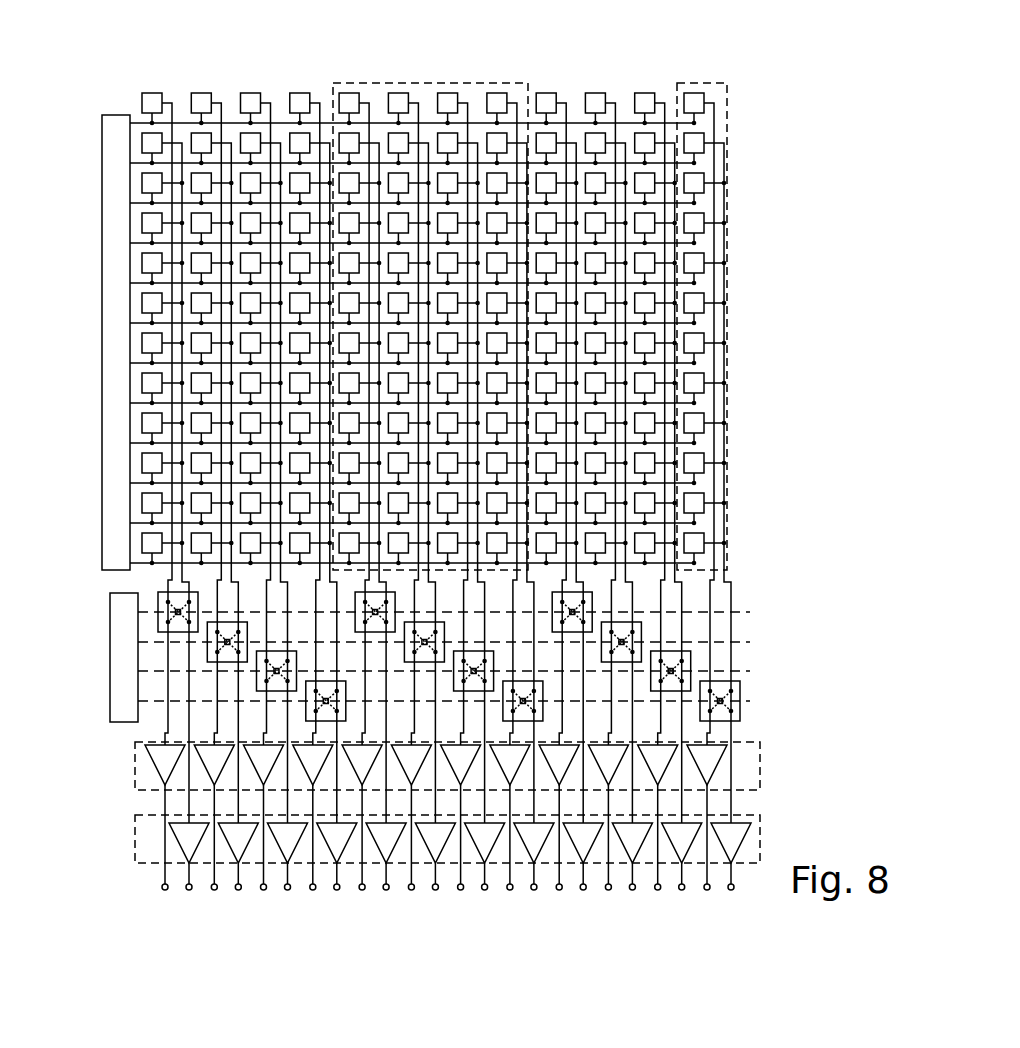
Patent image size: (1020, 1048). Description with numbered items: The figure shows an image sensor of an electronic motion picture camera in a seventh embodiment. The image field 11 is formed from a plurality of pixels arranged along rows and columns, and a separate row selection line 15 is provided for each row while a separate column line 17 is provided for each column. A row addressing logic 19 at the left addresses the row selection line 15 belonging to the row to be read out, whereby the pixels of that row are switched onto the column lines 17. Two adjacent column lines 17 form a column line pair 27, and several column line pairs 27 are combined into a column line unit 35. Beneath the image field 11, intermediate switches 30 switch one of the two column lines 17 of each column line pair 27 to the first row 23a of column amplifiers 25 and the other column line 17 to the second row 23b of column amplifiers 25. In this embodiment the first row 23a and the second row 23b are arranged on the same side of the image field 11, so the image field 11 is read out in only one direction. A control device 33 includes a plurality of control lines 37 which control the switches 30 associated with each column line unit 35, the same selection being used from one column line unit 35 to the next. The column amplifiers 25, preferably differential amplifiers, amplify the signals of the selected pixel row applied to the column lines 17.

The image field 11 is at (812, 318).
The row selection line 15 is at (127, 164).
The column line 17 is at (175, 576).
The row addressing logic 19 is at (100, 333).
The first row of column amplifiers 23a is at (133, 765).
The second row of column amplifiers 23b is at (133, 840).
The column amplifier 25 is at (721, 769).
The column line pair 27 is at (680, 80).
The intermediate switch 30 is at (695, 668).
The control device 33 is at (108, 675).
The column line unit 35 is at (485, 80).
The control line 37 is at (381, 676).